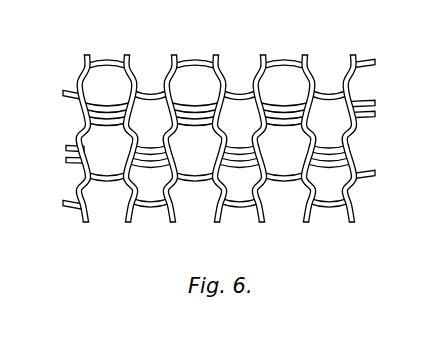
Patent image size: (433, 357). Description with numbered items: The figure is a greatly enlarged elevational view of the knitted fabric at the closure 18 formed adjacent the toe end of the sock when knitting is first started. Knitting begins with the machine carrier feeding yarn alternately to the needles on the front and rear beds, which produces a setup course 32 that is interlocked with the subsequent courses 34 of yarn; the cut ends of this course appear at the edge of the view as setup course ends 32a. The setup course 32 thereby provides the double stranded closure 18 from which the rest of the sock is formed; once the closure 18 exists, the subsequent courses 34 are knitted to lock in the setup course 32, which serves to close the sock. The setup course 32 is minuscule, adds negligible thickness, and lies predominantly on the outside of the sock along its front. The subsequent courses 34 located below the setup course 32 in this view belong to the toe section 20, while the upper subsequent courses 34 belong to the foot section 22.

The double stranded closure 18 is at (363, 102).
The toe section 20 is at (169, 235).
The foot section 22 is at (188, 48).
The setup course 32 is at (366, 113).
The weft wire cut end 32a is at (67, 146).
The subsequent courses 34 is at (87, 55).